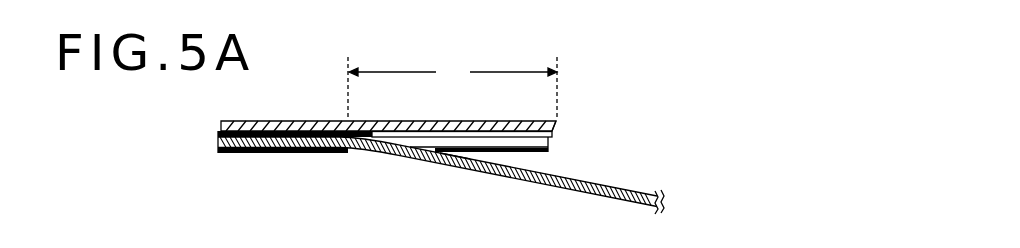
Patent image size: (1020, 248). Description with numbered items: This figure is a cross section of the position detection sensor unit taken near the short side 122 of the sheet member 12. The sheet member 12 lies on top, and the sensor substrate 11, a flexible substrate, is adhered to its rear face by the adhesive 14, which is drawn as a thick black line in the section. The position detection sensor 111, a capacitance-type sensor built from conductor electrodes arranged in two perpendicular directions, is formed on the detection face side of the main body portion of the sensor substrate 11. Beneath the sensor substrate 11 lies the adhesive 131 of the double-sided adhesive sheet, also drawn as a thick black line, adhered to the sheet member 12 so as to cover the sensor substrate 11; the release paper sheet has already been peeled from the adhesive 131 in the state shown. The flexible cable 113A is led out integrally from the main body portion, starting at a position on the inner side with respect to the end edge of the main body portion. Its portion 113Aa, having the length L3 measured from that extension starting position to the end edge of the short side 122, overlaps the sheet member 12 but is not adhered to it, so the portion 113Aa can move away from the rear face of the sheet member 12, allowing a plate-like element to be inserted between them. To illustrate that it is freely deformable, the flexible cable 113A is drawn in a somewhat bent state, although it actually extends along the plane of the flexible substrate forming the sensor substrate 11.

The sensor substrate 11 is at (546, 144).
The position detection sensor 111 is at (217, 144).
The sheet member 12 is at (422, 129).
The short side of the sheet member 122 is at (558, 122).
The adhesive 131 is at (298, 153).
The adhesive 14 is at (217, 135).
The flexible cable 113A is at (598, 199).
The portion of the flexible cable 113Aa is at (469, 163).
The length L3 is at (452, 87).